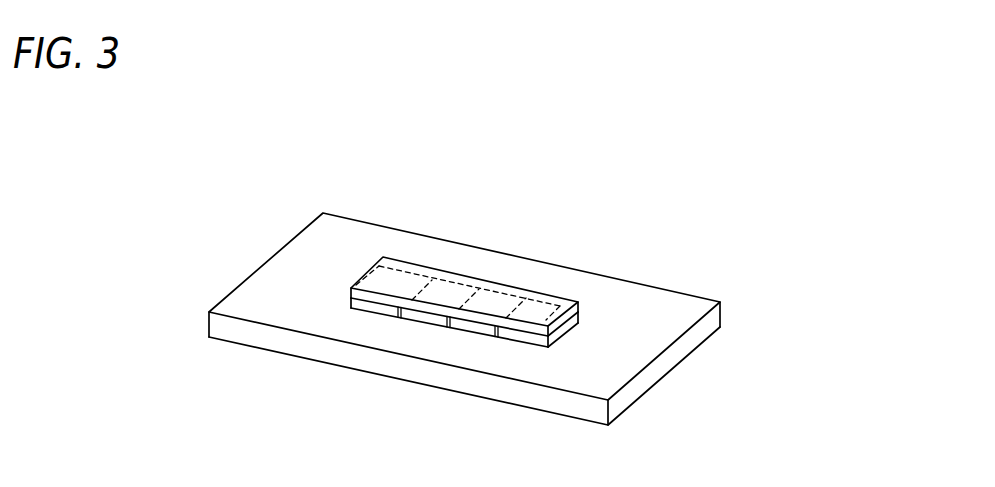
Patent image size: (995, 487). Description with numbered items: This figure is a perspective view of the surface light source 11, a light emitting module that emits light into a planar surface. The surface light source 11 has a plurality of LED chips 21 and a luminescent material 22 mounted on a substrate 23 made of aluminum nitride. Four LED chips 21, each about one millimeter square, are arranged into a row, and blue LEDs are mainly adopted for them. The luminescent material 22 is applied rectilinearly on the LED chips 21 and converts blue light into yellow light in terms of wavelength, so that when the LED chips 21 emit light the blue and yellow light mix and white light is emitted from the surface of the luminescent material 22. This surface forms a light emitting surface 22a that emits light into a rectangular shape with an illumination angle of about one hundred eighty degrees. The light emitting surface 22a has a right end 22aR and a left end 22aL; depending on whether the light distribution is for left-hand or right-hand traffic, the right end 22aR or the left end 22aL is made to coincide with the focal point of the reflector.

The surface light source 11 is at (403, 181).
The LED chips 21 is at (373, 312).
The luminescent material 22 is at (351, 290).
The light emitting surface 22a is at (497, 287).
The left end of the light emitting surface 22aL is at (367, 270).
The right end of the light emitting surface 22aR is at (560, 307).
The substrate 23 is at (615, 372).